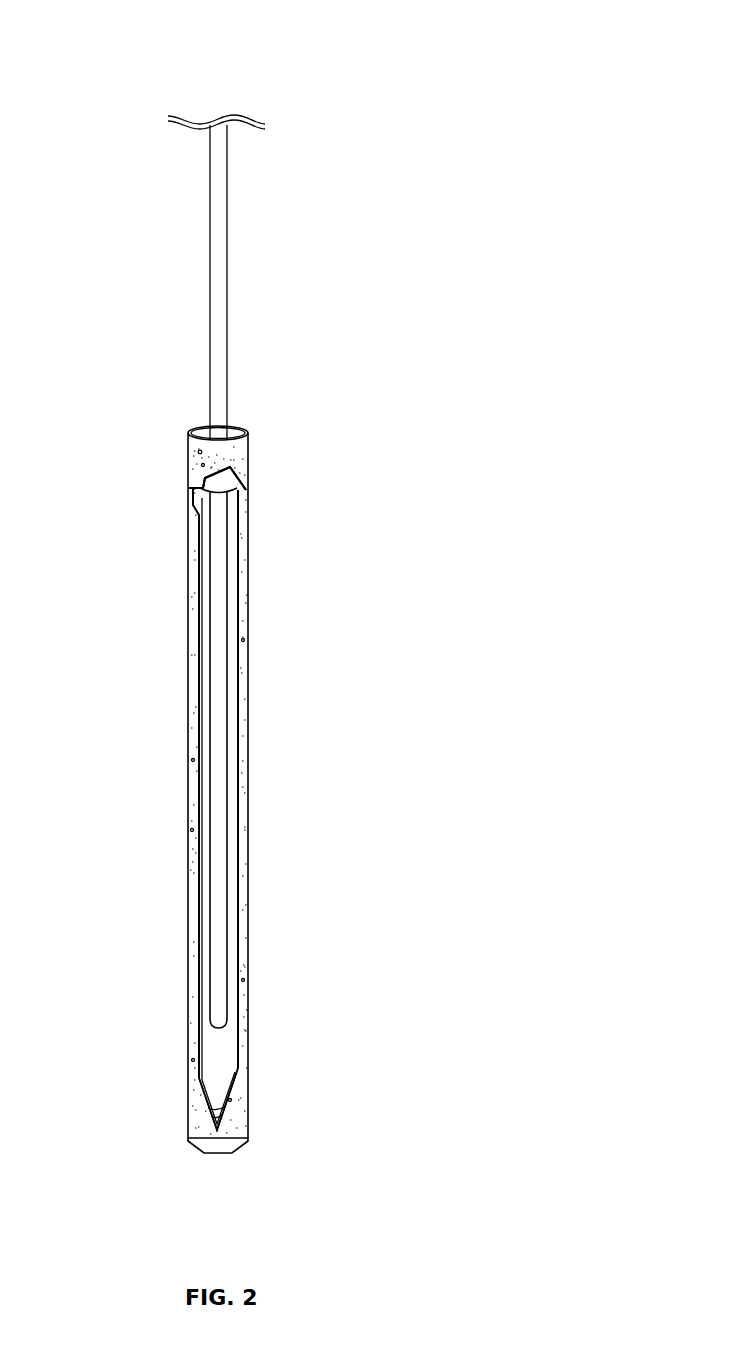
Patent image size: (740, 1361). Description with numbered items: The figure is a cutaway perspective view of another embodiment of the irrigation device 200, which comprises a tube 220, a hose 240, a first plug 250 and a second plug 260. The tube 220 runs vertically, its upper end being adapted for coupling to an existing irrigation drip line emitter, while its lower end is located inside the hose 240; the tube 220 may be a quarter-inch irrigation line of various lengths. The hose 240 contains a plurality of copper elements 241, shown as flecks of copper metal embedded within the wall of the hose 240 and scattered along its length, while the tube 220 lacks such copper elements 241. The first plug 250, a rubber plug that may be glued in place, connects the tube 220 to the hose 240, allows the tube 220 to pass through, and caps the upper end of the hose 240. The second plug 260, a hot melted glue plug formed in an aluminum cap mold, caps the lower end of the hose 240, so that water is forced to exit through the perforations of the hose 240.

The irrigation device 200 is at (320, 73).
The tube 220 is at (215, 289).
The hose 240 is at (248, 807).
The copper elements 241 is at (200, 452).
The first plug 250 is at (227, 487).
The second plug 260 is at (224, 1119).